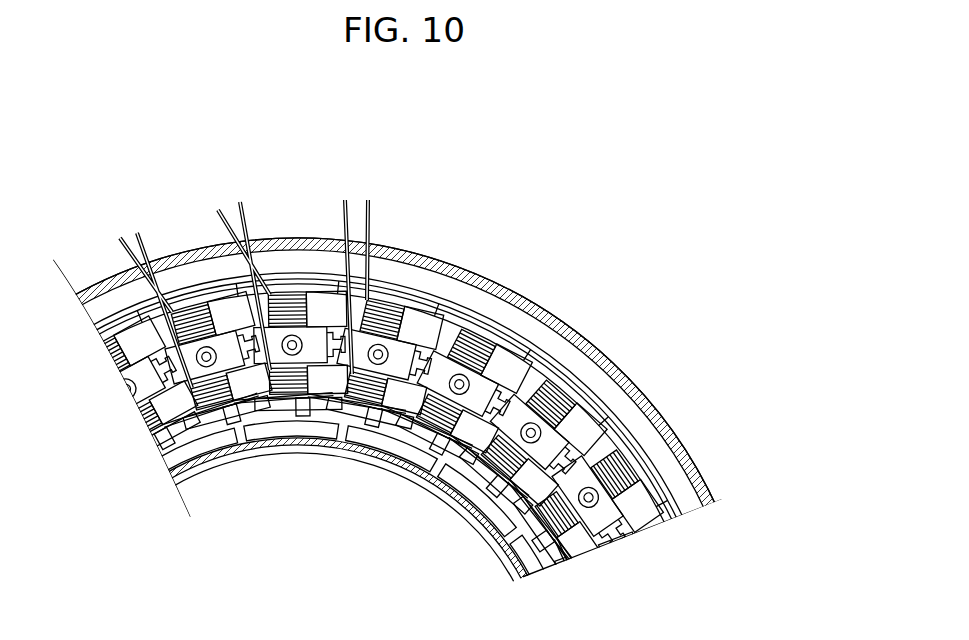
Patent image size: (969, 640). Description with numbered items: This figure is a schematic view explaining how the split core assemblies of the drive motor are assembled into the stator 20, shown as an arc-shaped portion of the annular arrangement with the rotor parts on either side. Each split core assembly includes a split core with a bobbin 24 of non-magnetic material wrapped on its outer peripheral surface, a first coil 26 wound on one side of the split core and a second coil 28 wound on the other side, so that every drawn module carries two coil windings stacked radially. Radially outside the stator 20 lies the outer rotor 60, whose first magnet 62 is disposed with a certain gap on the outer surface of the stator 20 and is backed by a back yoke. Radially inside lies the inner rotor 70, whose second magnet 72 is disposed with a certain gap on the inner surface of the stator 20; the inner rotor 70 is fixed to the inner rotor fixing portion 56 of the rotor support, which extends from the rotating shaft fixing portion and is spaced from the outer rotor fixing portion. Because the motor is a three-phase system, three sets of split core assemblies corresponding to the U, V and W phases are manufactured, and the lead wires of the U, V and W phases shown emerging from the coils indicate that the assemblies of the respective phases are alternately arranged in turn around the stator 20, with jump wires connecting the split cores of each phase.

The stator 20 is at (323, 302).
The bobbin 24 is at (530, 303).
The first coil 26 is at (217, 307).
The second coil 28 is at (197, 392).
The inner rotor fixing portion 56 is at (418, 486).
The outer rotor 60 is at (597, 331).
The first magnet 62 is at (470, 297).
The inner rotor 70 is at (358, 461).
The second magnet 72 is at (490, 513).
The U phase U is at (154, 295).
The V phase V is at (244, 273).
The W phase W is at (355, 271).